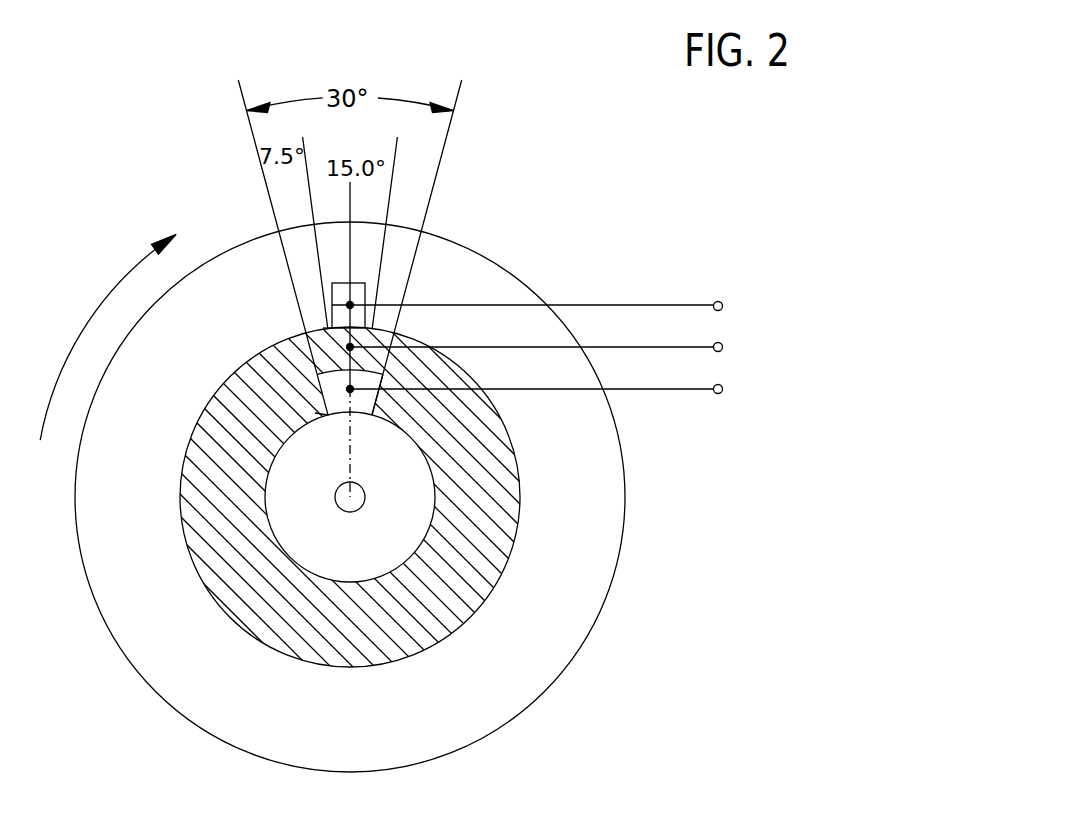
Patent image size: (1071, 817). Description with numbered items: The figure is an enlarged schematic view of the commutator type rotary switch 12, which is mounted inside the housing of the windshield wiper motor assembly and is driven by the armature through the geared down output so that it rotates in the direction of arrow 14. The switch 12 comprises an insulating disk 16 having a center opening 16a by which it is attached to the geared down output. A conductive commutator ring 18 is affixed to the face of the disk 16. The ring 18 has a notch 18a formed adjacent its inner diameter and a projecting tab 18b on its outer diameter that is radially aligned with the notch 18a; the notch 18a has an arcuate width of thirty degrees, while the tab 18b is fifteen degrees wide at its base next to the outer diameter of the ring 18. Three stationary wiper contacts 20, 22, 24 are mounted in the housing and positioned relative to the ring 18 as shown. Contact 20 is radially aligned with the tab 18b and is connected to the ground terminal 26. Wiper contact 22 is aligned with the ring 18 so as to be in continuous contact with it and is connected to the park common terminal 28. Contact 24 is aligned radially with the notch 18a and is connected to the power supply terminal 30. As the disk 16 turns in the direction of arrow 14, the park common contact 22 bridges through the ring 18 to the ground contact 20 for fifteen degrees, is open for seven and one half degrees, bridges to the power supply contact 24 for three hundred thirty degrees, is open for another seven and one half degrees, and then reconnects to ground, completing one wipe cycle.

The commutator type rotary switch 12 is at (604, 142).
The arrow 14 is at (88, 318).
The insulating disk 16 is at (270, 678).
The center opening 16a is at (338, 507).
The conductive commutator ring 18 is at (212, 542).
The notch 18a is at (372, 409).
The projecting tab 18b is at (366, 293).
The stationary wiper contact 20 is at (332, 293).
The wiper contact 22 is at (318, 337).
The stationary wiper contact 24 is at (320, 387).
The ground terminal 26 is at (716, 302).
The park common terminal 28 is at (715, 343).
The power supply terminal 30 is at (717, 394).